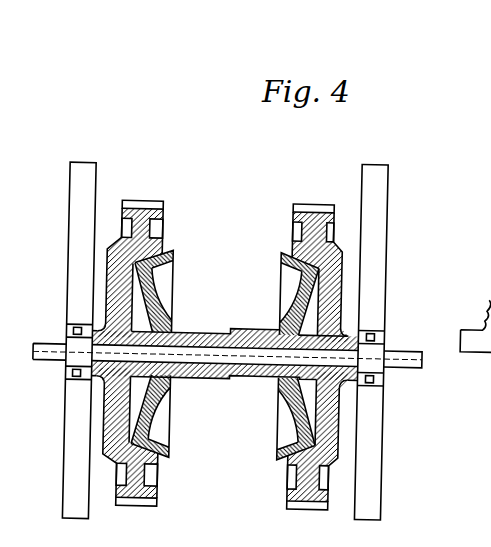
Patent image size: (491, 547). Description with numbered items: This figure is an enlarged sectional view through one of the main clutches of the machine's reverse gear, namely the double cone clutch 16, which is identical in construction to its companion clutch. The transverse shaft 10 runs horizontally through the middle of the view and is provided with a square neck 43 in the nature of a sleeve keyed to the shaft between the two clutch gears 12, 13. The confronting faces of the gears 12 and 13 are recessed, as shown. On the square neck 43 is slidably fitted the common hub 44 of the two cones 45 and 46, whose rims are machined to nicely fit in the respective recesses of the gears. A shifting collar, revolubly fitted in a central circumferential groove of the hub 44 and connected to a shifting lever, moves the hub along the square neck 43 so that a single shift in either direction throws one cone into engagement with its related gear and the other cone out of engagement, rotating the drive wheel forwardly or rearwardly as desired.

The transverse shaft 10 is at (411, 360).
The clutch gear 12 is at (332, 202).
The clutch gear 13 is at (159, 202).
The double cone clutch 16 is at (250, 377).
The square neck 43 is at (218, 381).
The common hub 44 is at (259, 328).
The cone 45 is at (290, 421).
The cone 46 is at (172, 301).